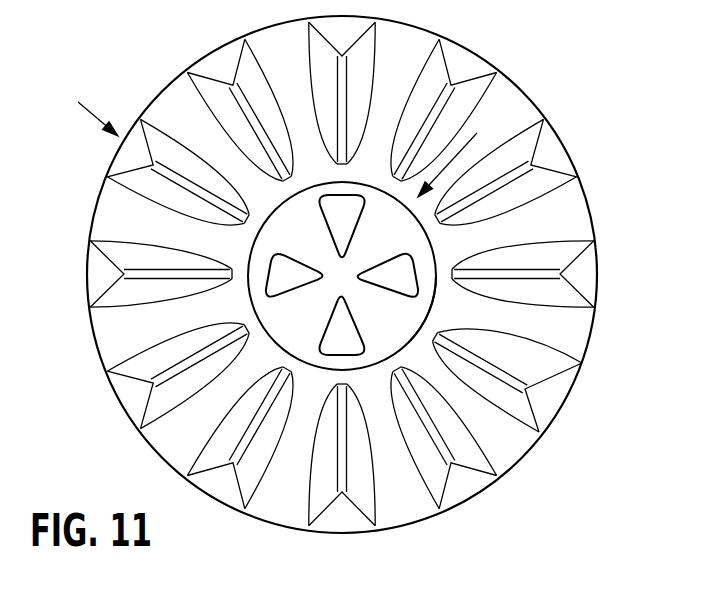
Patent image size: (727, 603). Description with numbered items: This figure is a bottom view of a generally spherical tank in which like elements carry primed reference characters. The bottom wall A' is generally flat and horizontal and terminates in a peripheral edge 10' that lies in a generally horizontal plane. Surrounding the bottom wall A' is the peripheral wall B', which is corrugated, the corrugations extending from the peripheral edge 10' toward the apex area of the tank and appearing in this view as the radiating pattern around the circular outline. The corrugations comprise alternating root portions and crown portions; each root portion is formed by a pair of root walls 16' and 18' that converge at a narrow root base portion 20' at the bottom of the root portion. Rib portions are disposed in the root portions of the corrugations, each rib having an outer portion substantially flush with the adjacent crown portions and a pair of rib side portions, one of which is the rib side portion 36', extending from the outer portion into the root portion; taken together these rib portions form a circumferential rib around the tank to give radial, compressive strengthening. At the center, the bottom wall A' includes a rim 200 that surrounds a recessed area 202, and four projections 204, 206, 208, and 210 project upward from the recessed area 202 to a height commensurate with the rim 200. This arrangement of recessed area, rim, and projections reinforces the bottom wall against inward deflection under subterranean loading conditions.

The peripheral edge 10' is at (331, 274).
The root wall 16' is at (508, 404).
The root wall 18' is at (534, 404).
The root base portion 20' is at (523, 404).
The rib side portion 36' is at (446, 457).
The rim 200 is at (283, 357).
The recessed area 202 is at (426, 291).
The projection 204 is at (328, 209).
The projection 206 is at (275, 272).
The projection 208 is at (352, 332).
The projection 210 is at (402, 268).
The bottom wall A' is at (460, 154).
The peripheral wall B' is at (87, 108).